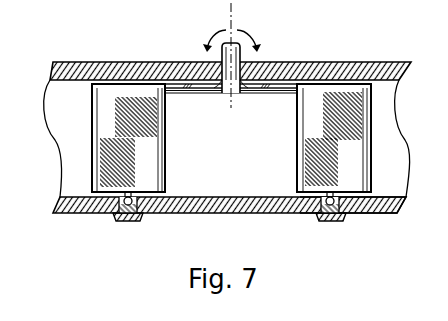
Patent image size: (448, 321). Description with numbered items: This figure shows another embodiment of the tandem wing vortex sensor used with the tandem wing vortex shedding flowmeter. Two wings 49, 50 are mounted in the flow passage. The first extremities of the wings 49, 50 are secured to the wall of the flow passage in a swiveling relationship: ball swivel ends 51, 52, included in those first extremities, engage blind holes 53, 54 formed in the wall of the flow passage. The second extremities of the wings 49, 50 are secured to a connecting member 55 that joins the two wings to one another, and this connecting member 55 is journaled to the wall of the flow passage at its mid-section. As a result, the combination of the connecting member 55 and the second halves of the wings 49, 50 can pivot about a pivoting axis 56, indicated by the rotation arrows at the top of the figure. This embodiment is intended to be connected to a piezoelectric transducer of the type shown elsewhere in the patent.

The wing 49 is at (118, 136).
The wing 50 is at (340, 143).
The ball swivel end 51 is at (143, 217).
The ball swivel end 52 is at (296, 217).
The blind hole 53 is at (85, 217).
The blind hole 54 is at (352, 216).
The connecting member 55 is at (168, 96).
The pivoting axis 56 is at (232, 8).